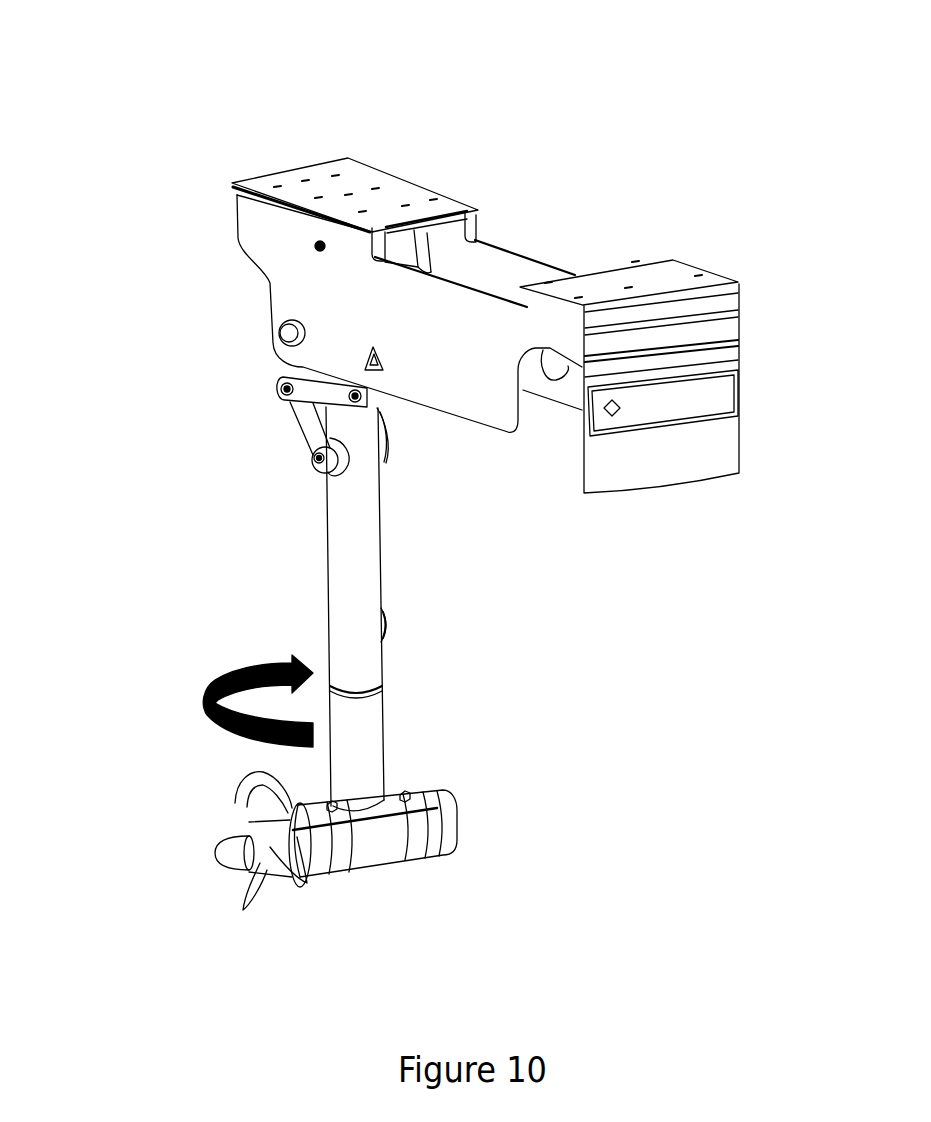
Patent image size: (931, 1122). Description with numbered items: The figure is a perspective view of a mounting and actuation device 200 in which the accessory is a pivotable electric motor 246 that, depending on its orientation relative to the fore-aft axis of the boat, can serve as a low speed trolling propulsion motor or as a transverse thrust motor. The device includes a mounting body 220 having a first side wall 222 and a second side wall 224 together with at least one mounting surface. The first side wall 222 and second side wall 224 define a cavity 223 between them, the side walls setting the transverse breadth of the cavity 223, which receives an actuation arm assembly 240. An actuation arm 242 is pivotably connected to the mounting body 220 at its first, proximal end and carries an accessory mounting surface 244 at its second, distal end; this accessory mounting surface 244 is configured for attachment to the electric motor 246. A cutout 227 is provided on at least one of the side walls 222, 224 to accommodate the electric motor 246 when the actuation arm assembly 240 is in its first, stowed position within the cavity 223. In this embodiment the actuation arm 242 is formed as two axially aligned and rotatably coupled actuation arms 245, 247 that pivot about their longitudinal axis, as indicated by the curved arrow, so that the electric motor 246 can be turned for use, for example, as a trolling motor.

The mounting and actuation device 200 is at (645, 164).
The mounting body 220 is at (620, 239).
The first side wall 222 is at (512, 286).
The cavity 223 is at (467, 250).
The second side wall 224 is at (468, 362).
The cutout 227 is at (552, 462).
The actuation arm assembly 240 is at (196, 643).
The actuation arm 242 is at (338, 593).
The accessory mounting surface 244 is at (420, 797).
The first actuation arm 245 is at (357, 660).
The electric motor 246 is at (367, 853).
The second actuation arm 247 is at (360, 737).